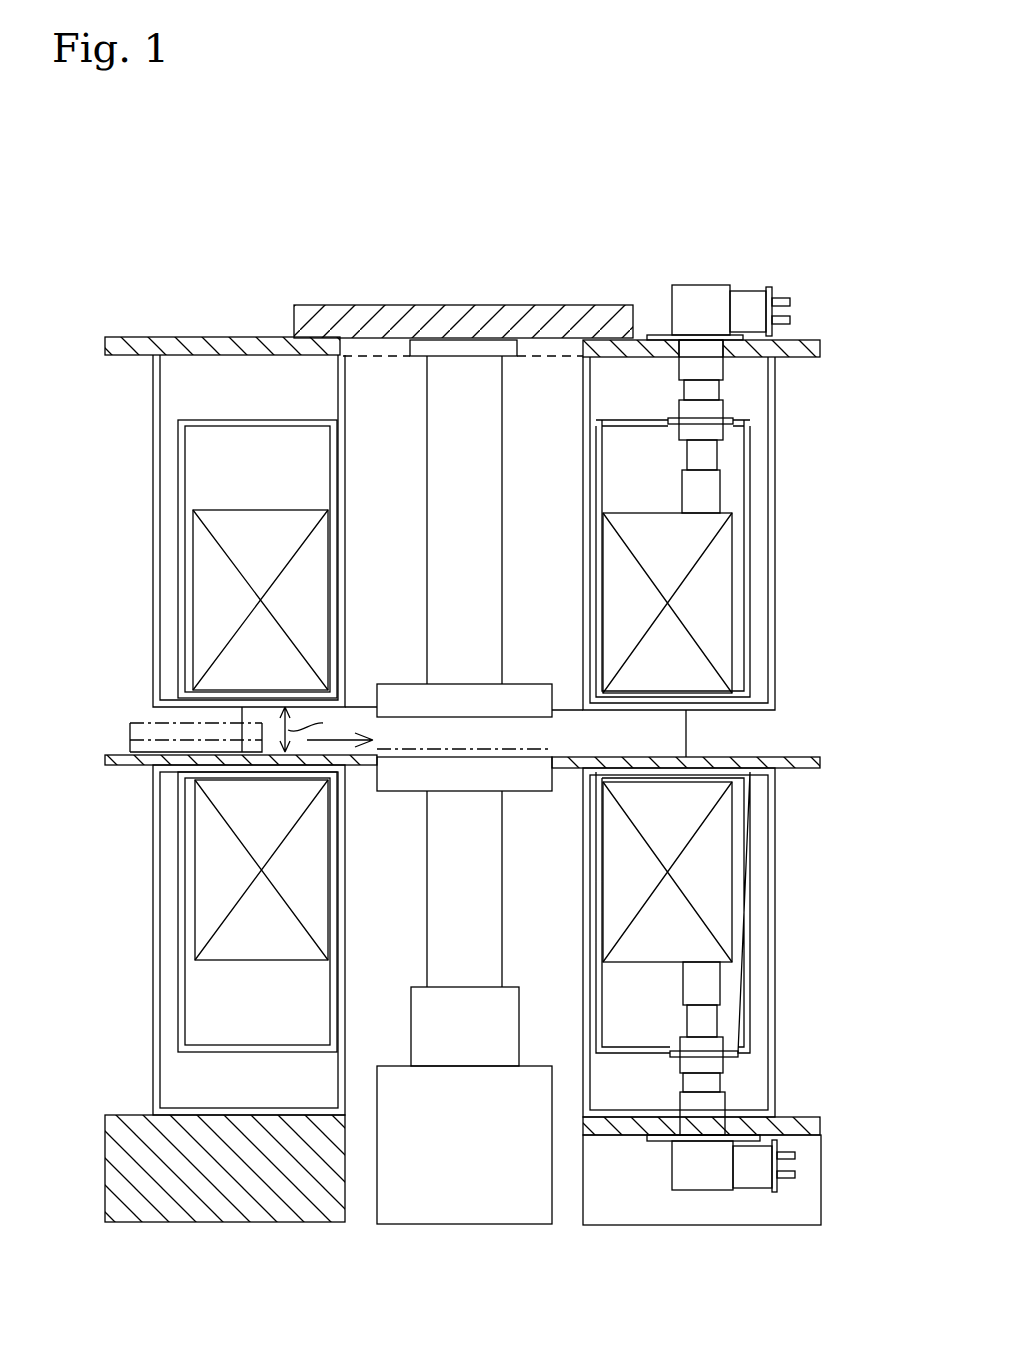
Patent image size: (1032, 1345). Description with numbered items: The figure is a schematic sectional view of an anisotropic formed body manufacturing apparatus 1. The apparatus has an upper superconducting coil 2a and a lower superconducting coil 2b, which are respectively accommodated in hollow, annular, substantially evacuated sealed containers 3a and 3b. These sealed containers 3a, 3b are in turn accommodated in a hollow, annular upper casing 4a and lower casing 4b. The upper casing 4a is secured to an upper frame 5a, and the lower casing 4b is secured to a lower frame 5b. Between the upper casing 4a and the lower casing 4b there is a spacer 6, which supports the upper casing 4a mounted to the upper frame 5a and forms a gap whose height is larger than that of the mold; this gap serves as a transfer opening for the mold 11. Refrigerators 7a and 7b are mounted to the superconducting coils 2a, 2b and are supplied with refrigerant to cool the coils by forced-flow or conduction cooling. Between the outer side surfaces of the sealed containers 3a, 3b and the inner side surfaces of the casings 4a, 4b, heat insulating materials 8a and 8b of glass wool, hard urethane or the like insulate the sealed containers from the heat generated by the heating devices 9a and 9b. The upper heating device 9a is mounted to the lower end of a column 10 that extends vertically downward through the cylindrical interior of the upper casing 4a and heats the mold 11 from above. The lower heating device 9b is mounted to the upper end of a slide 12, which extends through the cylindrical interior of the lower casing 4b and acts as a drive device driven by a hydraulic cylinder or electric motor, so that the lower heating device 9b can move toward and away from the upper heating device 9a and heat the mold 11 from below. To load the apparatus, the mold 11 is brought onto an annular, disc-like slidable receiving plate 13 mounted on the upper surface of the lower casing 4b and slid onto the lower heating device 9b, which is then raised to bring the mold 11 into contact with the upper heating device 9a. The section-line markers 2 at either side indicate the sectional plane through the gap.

The anisotropic formed body manufacturing apparatus 1 is at (636, 286).
The section line 2 is at (92, 740).
The upper superconducting coil 2a is at (734, 636).
The lower superconducting coil 2b is at (734, 860).
The sealed container 3a is at (752, 585).
The sealed container 3b is at (752, 905).
The upper casing 4a is at (776, 539).
The lower casing 4b is at (776, 954).
The upper frame 5a is at (270, 337).
The lower frame 5b is at (130, 1114).
The spacer 6 is at (358, 704).
The refrigerator 7a is at (718, 458).
The refrigerator 7b is at (718, 1026).
The heat insulating material 8a is at (592, 395).
The heat insulating material 8b is at (592, 1089).
The upper heating device 9a is at (527, 681).
The lower heating device 9b is at (530, 793).
The column 10 is at (503, 525).
The mold 11 is at (155, 722).
The slide 12 is at (504, 907).
The slidable receiving plate 13 is at (118, 768).